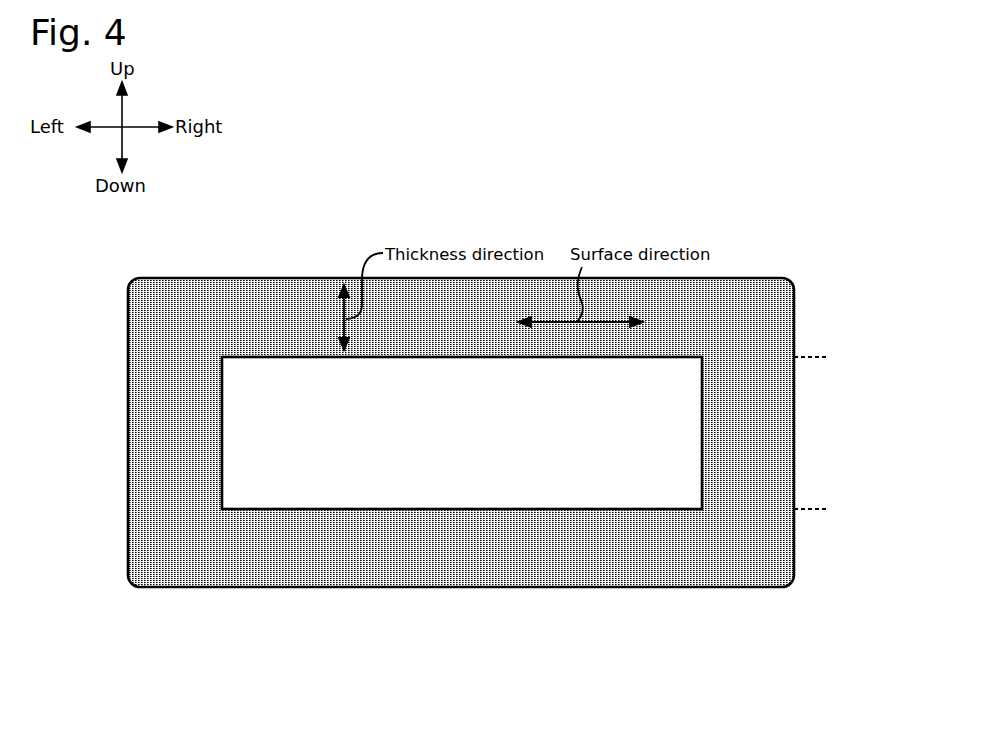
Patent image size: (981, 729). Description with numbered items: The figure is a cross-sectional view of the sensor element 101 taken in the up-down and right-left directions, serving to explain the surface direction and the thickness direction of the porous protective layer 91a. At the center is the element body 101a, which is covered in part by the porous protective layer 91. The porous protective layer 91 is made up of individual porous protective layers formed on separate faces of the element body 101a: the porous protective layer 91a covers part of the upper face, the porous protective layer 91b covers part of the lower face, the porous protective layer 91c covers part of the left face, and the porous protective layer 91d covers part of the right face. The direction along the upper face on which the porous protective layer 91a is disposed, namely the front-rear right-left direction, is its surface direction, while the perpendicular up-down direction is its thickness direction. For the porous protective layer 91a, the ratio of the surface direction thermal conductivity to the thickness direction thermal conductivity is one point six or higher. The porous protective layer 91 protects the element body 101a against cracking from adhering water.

The porous protective layer 91 is at (238, 192).
The porous protective layer 91a is at (250, 290).
The porous protective layer 91b is at (207, 575).
The porous protective layer 91c is at (145, 420).
The porous protective layer 91d is at (775, 382).
The sensor element 101 is at (888, 241).
The element body 101a is at (826, 357).